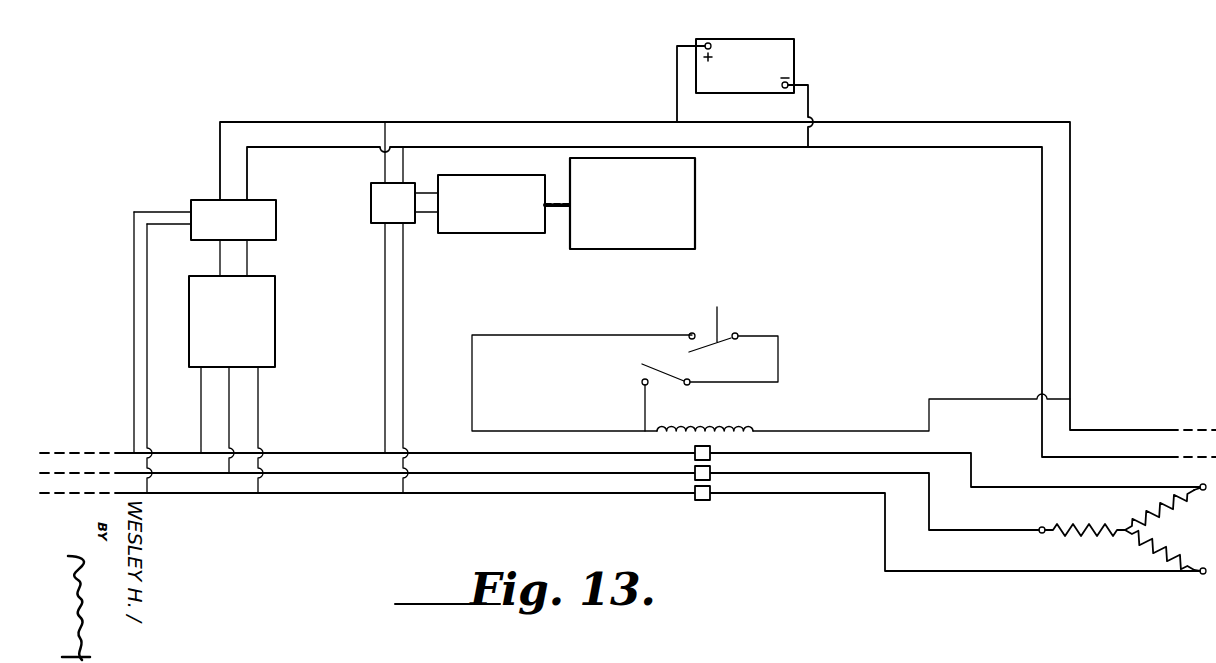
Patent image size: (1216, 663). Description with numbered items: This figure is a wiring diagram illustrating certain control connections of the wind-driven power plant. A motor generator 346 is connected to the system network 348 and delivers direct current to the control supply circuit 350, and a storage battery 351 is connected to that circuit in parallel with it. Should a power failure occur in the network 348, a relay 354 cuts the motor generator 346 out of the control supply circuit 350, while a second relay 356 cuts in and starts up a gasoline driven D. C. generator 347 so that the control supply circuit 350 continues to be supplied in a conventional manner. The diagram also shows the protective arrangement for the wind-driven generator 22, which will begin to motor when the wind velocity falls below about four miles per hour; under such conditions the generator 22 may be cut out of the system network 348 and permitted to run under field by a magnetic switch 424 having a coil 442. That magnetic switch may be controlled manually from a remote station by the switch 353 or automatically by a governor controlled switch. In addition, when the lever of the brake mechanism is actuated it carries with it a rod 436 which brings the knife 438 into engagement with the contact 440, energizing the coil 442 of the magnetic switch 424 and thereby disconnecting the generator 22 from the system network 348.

The generator 22 is at (1131, 532).
The motor generator 346 is at (275, 337).
The gasoline driven D. C. generator 347 is at (533, 246).
The system network 348 is at (610, 453).
The control supply circuit 350 is at (946, 148).
The storage battery 351 is at (785, 55).
The switch 353 is at (669, 387).
The relay 354 is at (207, 204).
The relay 356 is at (385, 217).
The magnetic switch 424 is at (721, 515).
The rod 436 is at (717, 318).
The knife 438 is at (735, 340).
The contact 440 is at (692, 332).
The coil 442 is at (733, 430).